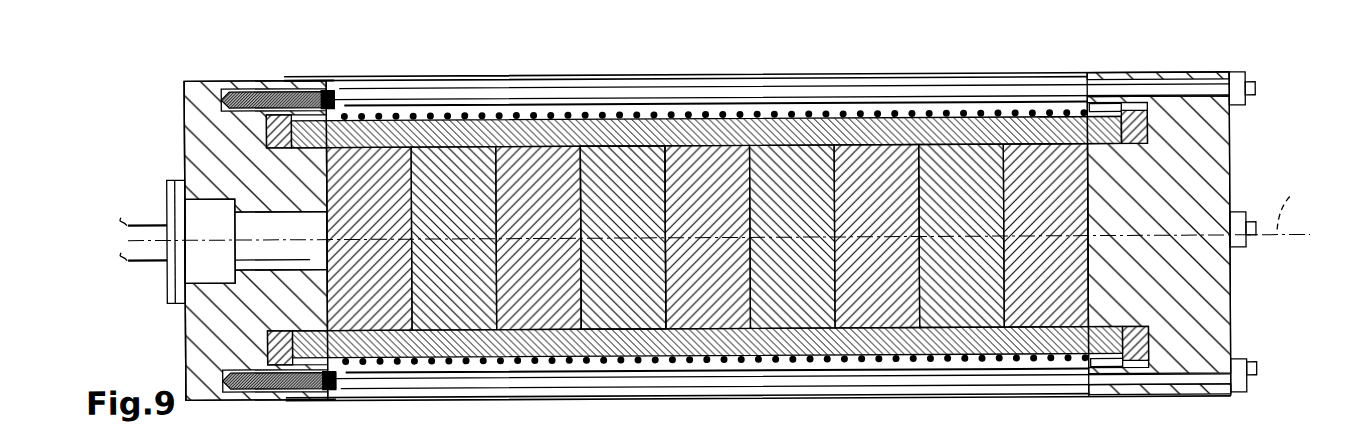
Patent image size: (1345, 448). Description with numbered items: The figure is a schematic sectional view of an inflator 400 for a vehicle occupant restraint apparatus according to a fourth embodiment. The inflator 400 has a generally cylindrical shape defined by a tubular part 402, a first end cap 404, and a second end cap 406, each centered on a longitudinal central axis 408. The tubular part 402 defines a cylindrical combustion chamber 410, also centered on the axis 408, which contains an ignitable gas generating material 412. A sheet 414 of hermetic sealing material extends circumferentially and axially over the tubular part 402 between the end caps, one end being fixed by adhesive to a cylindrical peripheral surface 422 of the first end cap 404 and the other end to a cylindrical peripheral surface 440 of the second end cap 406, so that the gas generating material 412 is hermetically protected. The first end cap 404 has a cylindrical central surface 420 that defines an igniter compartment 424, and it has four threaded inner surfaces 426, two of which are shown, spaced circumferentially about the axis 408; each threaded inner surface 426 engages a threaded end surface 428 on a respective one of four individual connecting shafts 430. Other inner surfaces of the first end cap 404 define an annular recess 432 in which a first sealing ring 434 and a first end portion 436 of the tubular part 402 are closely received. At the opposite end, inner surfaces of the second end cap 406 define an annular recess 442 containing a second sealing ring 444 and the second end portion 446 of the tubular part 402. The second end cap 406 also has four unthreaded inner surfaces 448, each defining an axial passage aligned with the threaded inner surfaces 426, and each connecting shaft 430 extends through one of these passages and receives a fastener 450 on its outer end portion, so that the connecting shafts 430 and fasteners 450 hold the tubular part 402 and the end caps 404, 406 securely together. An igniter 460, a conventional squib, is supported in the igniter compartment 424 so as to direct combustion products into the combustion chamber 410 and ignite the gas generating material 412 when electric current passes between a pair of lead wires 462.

The inflator 400 is at (130, 78).
The tubular part 402 is at (470, 111).
The first end cap 404 is at (183, 125).
The second end cap 406 is at (1236, 191).
The longitudinal central axis 408 is at (1298, 203).
The combustion chamber 410 is at (708, 237).
The ignitable gas generating material 412 is at (600, 146).
The sheet of hermetic sealing material 414 is at (790, 78).
The cylindrical central surface 420 is at (176, 197).
The cylindrical peripheral surface 422 is at (226, 82).
The igniter compartment 424 is at (193, 222).
The threaded inner surfaces 426 is at (258, 92).
The threaded end surface 428 is at (308, 80).
The connecting shafts 430 is at (900, 77).
The annular recess 432 is at (345, 133).
The first sealing ring 434 is at (266, 128).
The first end portion 436 is at (290, 108).
The cylindrical peripheral surface 440 is at (1160, 81).
The annular recess 442 is at (1086, 129).
The second sealing ring 444 is at (1150, 133).
The second end portion 446 is at (1113, 114).
The unthreaded inner surfaces 448 is at (1183, 85).
The fastener 450 is at (1238, 78).
The igniter 460 is at (164, 292).
The lead wires 462 is at (140, 261).